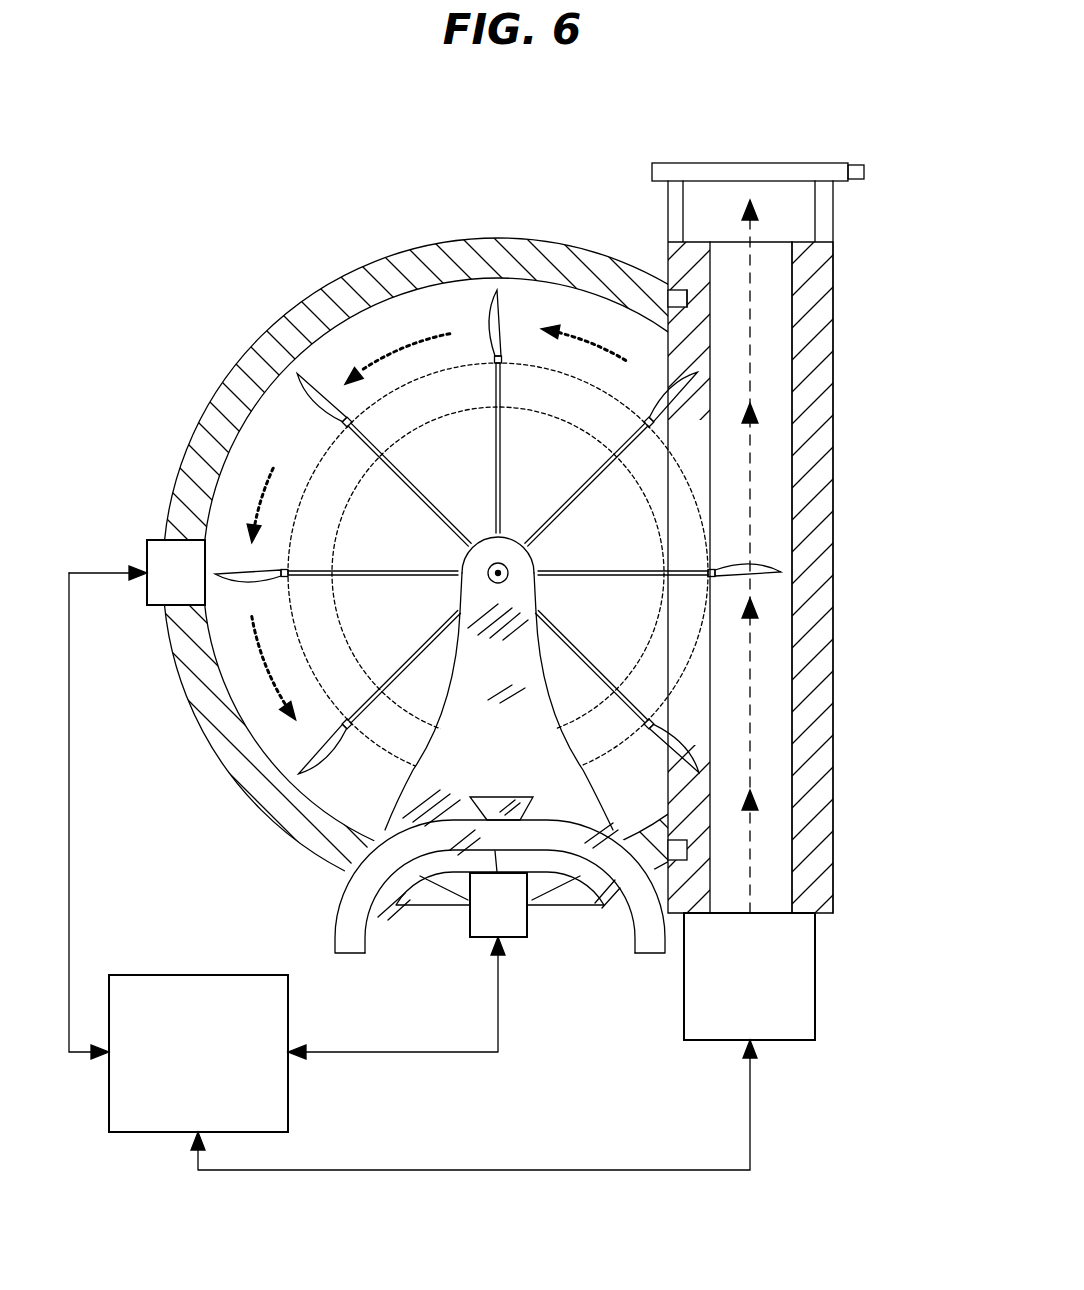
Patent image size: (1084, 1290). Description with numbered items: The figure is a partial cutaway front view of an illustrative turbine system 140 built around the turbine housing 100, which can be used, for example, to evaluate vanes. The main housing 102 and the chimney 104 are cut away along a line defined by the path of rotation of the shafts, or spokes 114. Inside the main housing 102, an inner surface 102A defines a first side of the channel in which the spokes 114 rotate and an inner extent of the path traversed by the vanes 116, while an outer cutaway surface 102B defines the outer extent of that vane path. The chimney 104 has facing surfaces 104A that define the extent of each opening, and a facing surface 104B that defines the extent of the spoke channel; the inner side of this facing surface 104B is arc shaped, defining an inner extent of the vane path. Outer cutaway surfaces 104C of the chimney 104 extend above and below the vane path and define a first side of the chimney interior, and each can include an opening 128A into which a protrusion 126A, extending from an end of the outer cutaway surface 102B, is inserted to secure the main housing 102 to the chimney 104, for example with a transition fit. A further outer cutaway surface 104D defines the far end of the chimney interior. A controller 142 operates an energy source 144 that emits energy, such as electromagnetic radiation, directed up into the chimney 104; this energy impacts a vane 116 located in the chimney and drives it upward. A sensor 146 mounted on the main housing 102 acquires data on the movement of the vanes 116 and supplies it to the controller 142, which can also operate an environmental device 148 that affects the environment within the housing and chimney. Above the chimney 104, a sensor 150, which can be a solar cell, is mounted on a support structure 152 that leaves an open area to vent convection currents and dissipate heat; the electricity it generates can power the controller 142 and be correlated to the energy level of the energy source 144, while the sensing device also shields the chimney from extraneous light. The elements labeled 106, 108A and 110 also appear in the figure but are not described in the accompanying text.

The turbine housing 100 is at (192, 360).
The main housing 102 is at (357, 262).
The inner surface 102A is at (567, 408).
The outer cutaway surface 102B is at (486, 247).
The chimney 104 is at (835, 468).
The facing surfaces 104A is at (705, 403).
The facing surface 104B is at (700, 593).
The outer cutaway surfaces 104C is at (700, 338).
The outer cutaway surface 104D is at (825, 797).
The inlet manifold 106 is at (397, 940).
The inlet conduit 108A is at (345, 920).
The hub / shaft 110 is at (488, 571).
The spokes 114 is at (493, 435).
The vanes 116 is at (752, 557).
The protrusion 126A is at (668, 297).
The opening 128A is at (687, 297).
The turbine system 140 is at (128, 152).
The controller 142 is at (177, 1102).
The energy source 144 is at (729, 1030).
The sensor 146 is at (156, 587).
The environmental device 148 is at (478, 927).
The sensor 150 is at (752, 165).
The support structure 152 is at (858, 205).